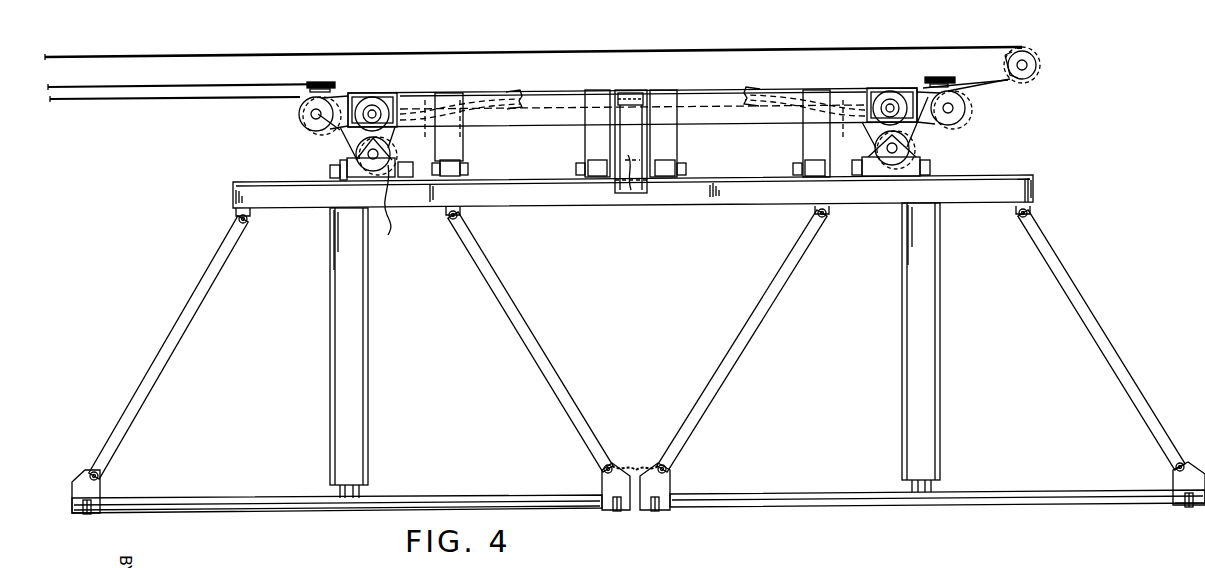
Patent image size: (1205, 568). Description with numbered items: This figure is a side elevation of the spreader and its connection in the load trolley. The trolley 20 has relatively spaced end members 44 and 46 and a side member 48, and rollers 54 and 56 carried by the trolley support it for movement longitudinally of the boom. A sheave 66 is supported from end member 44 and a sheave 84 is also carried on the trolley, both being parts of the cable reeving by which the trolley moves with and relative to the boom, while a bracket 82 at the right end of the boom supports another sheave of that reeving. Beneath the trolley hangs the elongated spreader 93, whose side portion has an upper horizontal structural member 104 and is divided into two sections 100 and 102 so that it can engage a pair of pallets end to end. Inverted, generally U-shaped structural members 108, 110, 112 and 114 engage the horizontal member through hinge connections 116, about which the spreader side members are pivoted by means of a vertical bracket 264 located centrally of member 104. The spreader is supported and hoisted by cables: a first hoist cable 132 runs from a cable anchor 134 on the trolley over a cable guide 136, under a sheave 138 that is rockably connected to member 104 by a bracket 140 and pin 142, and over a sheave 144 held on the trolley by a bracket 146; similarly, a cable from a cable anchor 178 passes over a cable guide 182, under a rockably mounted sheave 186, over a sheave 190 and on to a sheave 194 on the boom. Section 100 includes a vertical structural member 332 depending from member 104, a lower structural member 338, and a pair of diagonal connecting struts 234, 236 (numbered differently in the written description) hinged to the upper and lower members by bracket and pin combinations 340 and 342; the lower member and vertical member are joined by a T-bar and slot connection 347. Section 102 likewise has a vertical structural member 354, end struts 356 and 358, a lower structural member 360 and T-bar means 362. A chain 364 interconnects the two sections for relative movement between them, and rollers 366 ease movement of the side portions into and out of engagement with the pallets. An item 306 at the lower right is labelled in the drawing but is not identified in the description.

The trolley 20 is at (596, 87).
The end member 44 is at (359, 93).
The end member 46 is at (908, 88).
The side member 48 is at (428, 96).
The roller 54 is at (374, 106).
The roller 56 is at (889, 98).
The sheave 66 is at (320, 82).
The bracket 82 is at (1006, 56).
The sheave 84 is at (944, 84).
The spreader 93 is at (648, 302).
The spreader section 100 is at (278, 345).
The spreader section 102 is at (1020, 334).
The upper horizontal structural member 104 is at (562, 204).
The inverted U-shaped structural member 108 is at (450, 135).
The inverted U-shaped structural member 110 is at (592, 128).
The inverted U-shaped structural member 112 is at (668, 122).
The inverted U-shaped structural member 114 is at (812, 135).
The hinge connection 116 is at (554, 166).
The first hoist cable 132 is at (125, 101).
The cable anchor 134 is at (506, 94).
The cable guide 136 is at (431, 128).
The sheave 138 is at (356, 148).
The bracket 140 is at (401, 207).
The pin 142 is at (330, 170).
The sheave 144 is at (298, 114).
The bracket 146 is at (312, 122).
The cable anchor 178 is at (761, 94).
The cable guide 182 is at (847, 126).
The sheave 186 is at (912, 146).
The sheave 190 is at (955, 122).
The sheave 194 is at (1046, 38).
The left outer brace 234 is at (165, 352).
The left inner brace 236 is at (542, 355).
The vertical bracket 264 is at (629, 196).
The floor 306 is at (1122, 567).
The vertical structural member 332 is at (372, 310).
The lower structural member 338 is at (256, 500).
The bracket and pin combination 340 is at (100, 482).
The bracket and pin combination 342 is at (602, 482).
The T-bar and slot connection 347 is at (390, 487).
The vertical structural member 354 is at (908, 335).
The end strut 356 is at (742, 356).
The end strut 358 is at (1093, 341).
The lower structural member 360 is at (833, 494).
The T-bar means 362 is at (953, 485).
The chain 364 is at (637, 465).
The rollers 366 is at (86, 515).